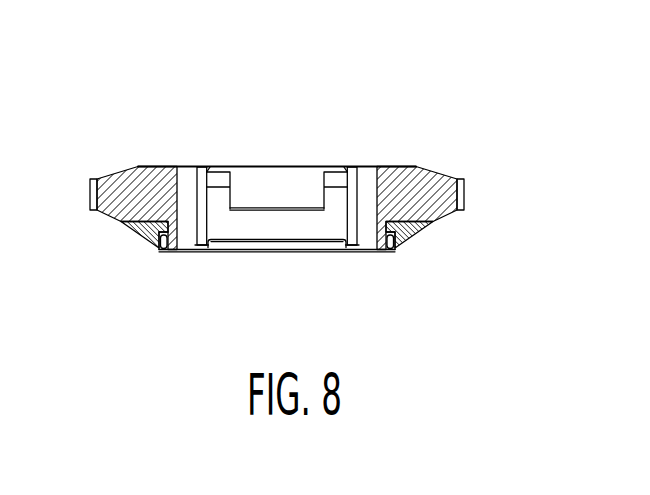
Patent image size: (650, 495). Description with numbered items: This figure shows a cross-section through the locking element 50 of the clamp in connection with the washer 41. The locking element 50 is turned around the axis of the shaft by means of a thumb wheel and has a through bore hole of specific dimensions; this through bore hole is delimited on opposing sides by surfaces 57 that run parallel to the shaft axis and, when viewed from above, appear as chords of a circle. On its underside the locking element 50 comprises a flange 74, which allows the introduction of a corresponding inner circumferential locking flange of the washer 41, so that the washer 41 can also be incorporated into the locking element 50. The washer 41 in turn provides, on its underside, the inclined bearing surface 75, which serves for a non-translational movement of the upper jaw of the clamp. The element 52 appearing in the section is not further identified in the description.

The locking element 50 is at (430, 178).
The inner ring insert 52 is at (253, 178).
The surfaces 57 is at (231, 232).
The flange 74 is at (137, 240).
The washer 41 is at (433, 224).
The inclined bearing surface 75 is at (395, 248).